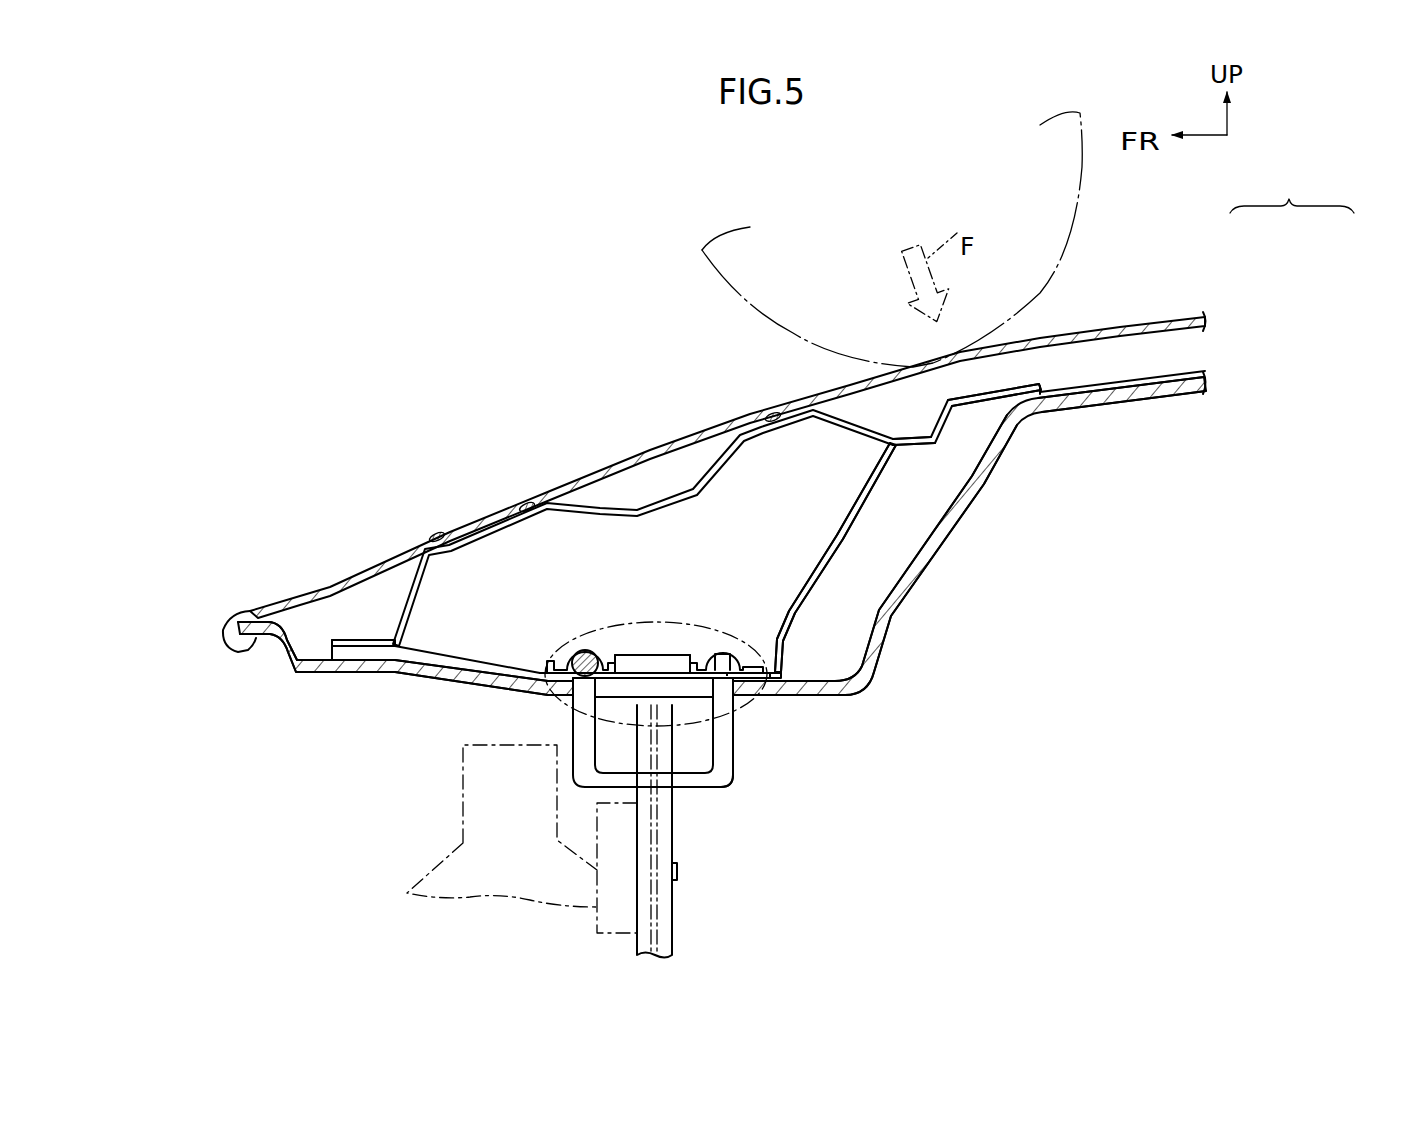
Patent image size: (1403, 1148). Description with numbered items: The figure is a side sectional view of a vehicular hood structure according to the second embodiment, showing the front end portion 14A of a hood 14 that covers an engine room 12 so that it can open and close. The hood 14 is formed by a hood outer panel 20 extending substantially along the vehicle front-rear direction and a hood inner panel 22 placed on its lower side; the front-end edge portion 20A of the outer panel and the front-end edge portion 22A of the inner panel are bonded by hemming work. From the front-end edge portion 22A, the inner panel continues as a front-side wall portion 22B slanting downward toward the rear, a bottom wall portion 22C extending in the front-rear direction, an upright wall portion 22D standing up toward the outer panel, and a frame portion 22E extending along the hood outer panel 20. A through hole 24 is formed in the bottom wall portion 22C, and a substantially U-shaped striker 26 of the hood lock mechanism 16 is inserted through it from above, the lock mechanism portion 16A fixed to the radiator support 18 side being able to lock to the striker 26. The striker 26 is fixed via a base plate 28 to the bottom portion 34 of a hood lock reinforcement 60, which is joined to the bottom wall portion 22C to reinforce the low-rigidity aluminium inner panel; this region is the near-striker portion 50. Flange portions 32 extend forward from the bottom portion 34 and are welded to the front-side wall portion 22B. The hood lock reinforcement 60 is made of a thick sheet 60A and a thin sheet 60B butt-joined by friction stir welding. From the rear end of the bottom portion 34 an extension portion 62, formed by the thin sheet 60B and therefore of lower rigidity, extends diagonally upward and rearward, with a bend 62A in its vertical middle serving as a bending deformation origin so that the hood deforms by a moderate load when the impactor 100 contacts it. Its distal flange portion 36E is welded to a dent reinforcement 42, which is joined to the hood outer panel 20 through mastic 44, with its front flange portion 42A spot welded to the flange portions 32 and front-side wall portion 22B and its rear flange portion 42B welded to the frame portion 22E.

The engine room 12 is at (1172, 703).
The hood 14 is at (1292, 189).
The front end portion of the hood 14A is at (623, 403).
The hood lock mechanism 16 is at (765, 831).
The lock mechanism portion 16A is at (675, 888).
The radiator support 18 is at (462, 838).
The hood outer panel 20 is at (744, 474).
The front-end edge portion of the hood outer panel 20A is at (248, 655).
The hood inner panel 22 is at (778, 477).
The front-end edge portion of the hood inner panel 22A is at (242, 610).
The front-side wall portion 22B is at (373, 675).
The bottom wall portion 22C is at (562, 690).
The upright wall portion 22D is at (957, 528).
The frame portion 22E is at (1143, 405).
The through hole 24 is at (694, 760).
The striker 26 is at (739, 769).
The base plate 28 is at (588, 645).
The flange portions 32 is at (382, 655).
The bottom portion 34 is at (695, 693).
The flange portion 36E is at (925, 446).
The dent reinforcement 42 is at (721, 462).
The flange portion on the front end of the dent reinforcement 42A is at (353, 639).
The flange portion on the rear end of the dent reinforcement 42B is at (1038, 383).
The mastic 44 is at (527, 505).
The near-striker portion 50 is at (649, 619).
The hood lock reinforcement 60 is at (844, 592).
The thick sheet 60A is at (766, 698).
The thin sheet 60B is at (841, 537).
The extension portion 62 is at (822, 590).
The bend 62A is at (791, 614).
The impactor 100 is at (1072, 236).